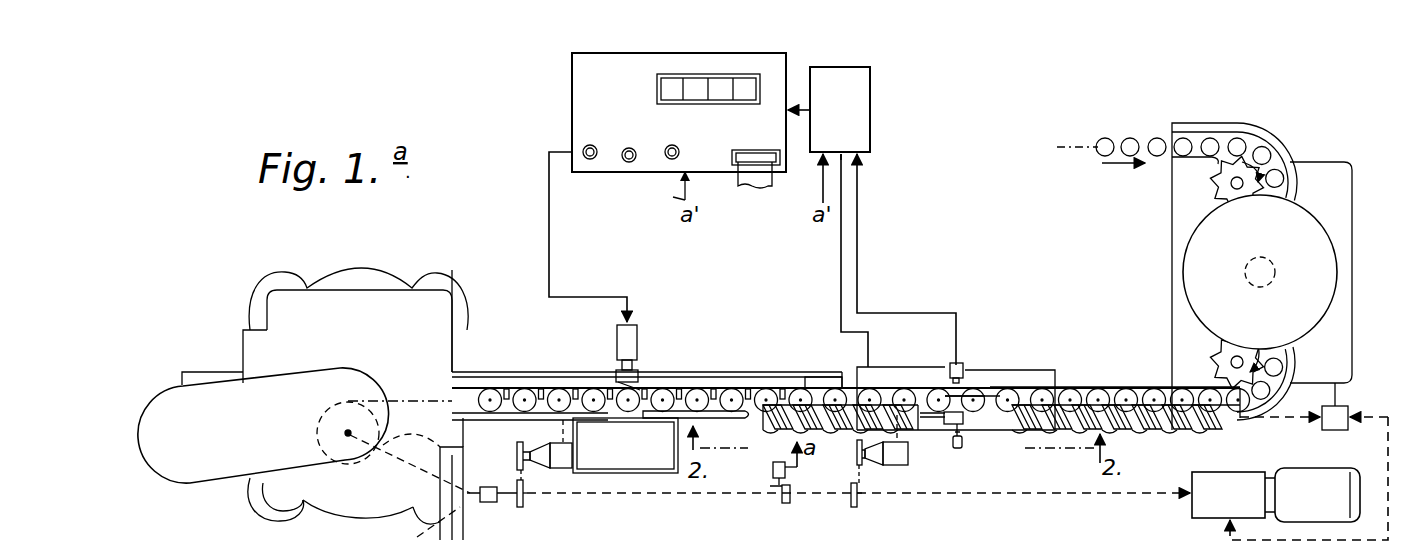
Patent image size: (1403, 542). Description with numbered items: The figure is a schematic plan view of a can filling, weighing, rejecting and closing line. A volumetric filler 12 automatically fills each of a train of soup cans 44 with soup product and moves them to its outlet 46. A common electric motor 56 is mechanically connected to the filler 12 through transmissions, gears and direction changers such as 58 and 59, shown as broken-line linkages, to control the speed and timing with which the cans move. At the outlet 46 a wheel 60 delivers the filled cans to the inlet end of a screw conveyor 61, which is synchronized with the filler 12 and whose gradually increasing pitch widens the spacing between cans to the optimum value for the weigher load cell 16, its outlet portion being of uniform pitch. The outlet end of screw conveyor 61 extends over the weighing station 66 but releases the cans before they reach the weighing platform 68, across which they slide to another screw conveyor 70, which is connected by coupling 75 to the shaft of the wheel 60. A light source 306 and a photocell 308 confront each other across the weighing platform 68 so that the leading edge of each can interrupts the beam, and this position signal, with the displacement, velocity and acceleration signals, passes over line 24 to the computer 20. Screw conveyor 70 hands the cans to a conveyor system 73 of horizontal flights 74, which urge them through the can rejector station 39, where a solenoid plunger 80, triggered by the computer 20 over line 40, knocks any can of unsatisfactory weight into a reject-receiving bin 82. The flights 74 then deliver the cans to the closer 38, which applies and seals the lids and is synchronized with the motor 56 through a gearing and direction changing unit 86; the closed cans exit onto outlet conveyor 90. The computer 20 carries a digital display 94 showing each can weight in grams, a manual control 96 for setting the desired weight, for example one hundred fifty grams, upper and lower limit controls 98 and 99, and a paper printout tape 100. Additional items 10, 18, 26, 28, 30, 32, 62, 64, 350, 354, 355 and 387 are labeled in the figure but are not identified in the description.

The article feed path 10 is at (1082, 147).
The volumetric filler 12 is at (1180, 244).
The weigher load cell 16 is at (943, 425).
The control unit 18 is at (858, 118).
The computer 20 is at (660, 42).
The line 24 is at (857, 250).
The sensor 26 is at (774, 472).
The conductor 28 is at (817, 200).
The conductor 30 is at (806, 106).
The conductor 32 is at (678, 190).
The closer 38 is at (326, 276).
The can rejector station 39 is at (640, 384).
The line 40 is at (549, 238).
The soup can 44 is at (1156, 139).
The outlet 46 is at (1321, 406).
The electric motor 56 is at (1312, 495).
The transmission and direction changer 58 is at (1228, 495).
The transmission and direction changer 59 is at (1350, 406).
The wheel 60 is at (1213, 348).
The screw conveyor 61 is at (1150, 428).
The guide rail 62 is at (1078, 382).
The guide rail 64 is at (1108, 386).
The weighing station 66 is at (885, 376).
The weighing platform 68 is at (955, 400).
The screw conveyor 70 is at (838, 428).
The conveyor system 73 is at (716, 387).
The flights 74 is at (768, 393).
The coupling 75 is at (965, 425).
The solenoid plunger 80 is at (615, 378).
The reject-receiving bin 82 is at (620, 445).
The gearing and direction changing unit 86 is at (488, 502).
The outlet conveyor 90 is at (425, 524).
The digital display 94 is at (722, 74).
The manual control 96 is at (678, 148).
The upper limit control 98 is at (626, 149).
The lower limit control 99 is at (586, 148).
The tape 100 is at (752, 180).
The light source 306 is at (958, 450).
The photocell 308 is at (960, 365).
The conductor 350 is at (942, 494).
The transducer 354 is at (897, 466).
The ramp section 355 is at (1038, 432).
The plate 387 is at (818, 387).